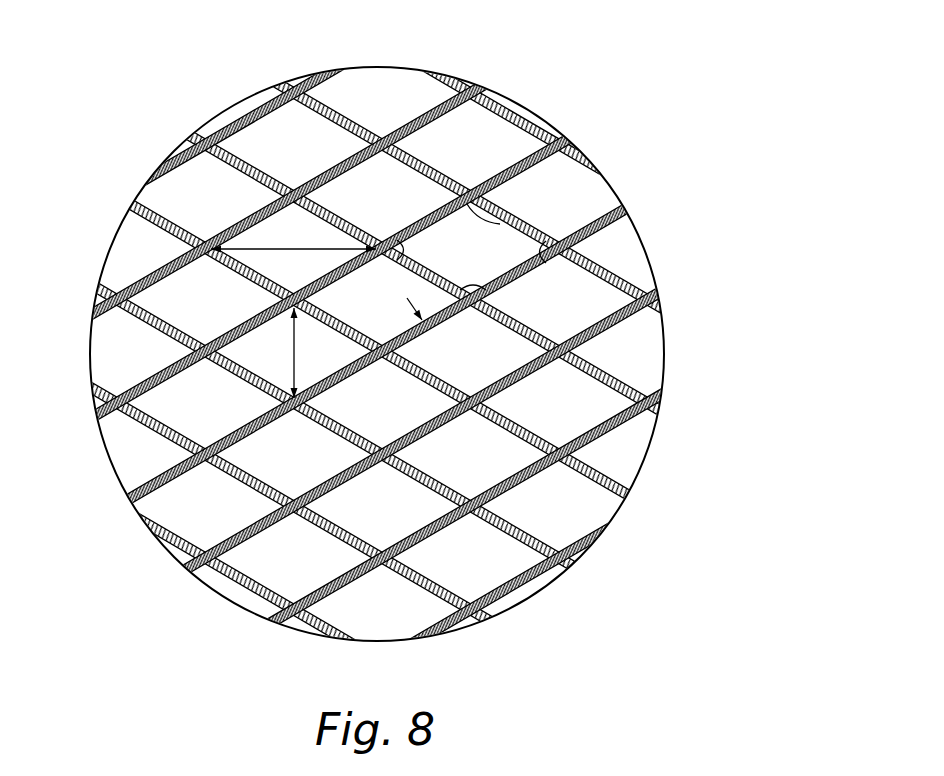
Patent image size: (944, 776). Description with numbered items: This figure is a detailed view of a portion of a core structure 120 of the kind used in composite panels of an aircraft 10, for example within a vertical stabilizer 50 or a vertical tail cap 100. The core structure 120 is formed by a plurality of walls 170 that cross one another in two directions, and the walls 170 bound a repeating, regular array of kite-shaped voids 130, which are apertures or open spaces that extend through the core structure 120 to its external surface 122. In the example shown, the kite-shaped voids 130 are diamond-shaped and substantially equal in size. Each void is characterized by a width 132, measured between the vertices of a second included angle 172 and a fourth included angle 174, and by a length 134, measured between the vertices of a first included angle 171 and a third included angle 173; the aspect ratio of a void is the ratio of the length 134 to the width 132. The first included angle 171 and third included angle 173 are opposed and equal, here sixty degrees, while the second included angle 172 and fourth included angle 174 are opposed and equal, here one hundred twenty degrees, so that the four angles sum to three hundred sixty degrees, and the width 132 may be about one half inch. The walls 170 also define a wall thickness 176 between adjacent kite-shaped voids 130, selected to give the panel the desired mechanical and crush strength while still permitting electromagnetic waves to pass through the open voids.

The aircraft 10 is at (703, 90).
The vertical stabilizer 50 is at (697, 168).
The vertical tail cap 100 is at (384, 368).
The core structure 120 is at (183, 132).
The external surface 122 is at (150, 222).
The kite-shaped void 130 is at (168, 313).
The width 132 is at (293, 353).
The length 134 is at (295, 247).
The wall 170 is at (167, 236).
The first included angle 171 is at (420, 223).
The second included angle 172 is at (502, 224).
The third included angle 173 is at (518, 267).
The fourth included angle 174 is at (462, 285).
The wall thickness 176 is at (428, 333).